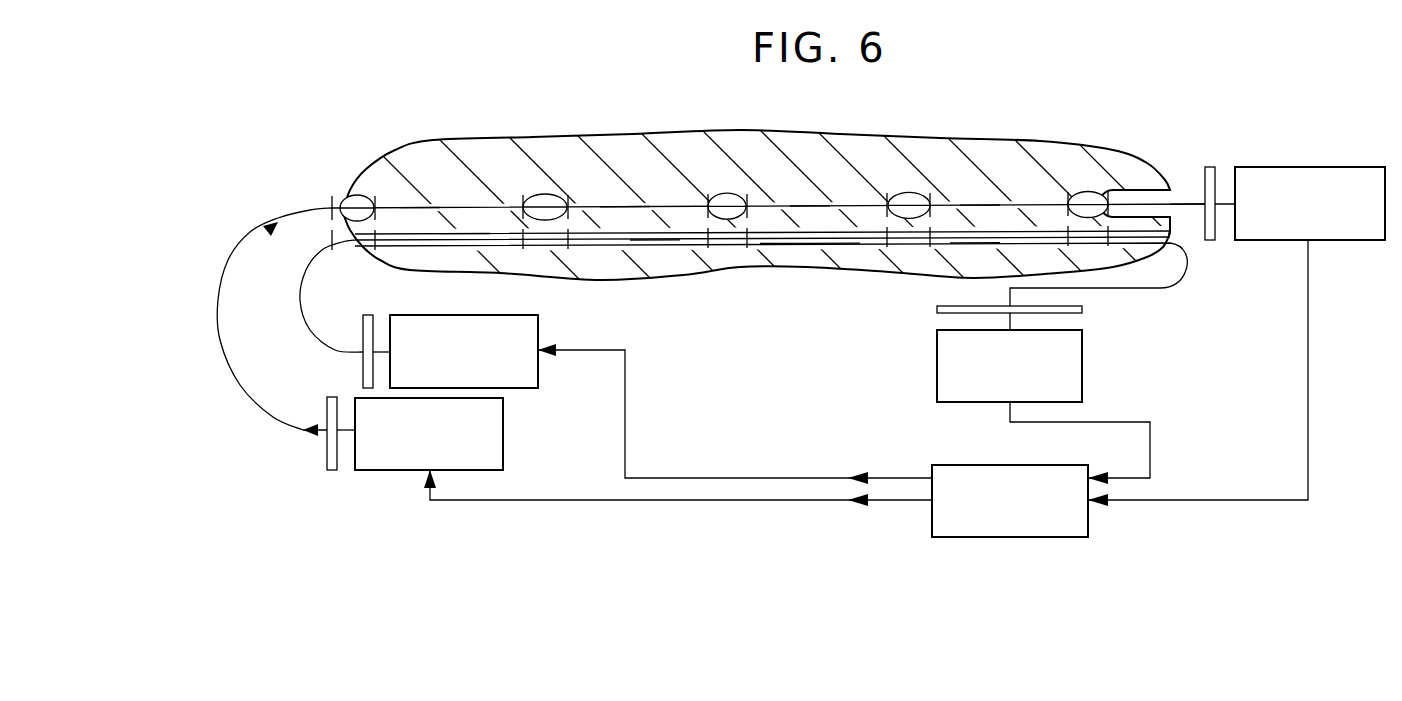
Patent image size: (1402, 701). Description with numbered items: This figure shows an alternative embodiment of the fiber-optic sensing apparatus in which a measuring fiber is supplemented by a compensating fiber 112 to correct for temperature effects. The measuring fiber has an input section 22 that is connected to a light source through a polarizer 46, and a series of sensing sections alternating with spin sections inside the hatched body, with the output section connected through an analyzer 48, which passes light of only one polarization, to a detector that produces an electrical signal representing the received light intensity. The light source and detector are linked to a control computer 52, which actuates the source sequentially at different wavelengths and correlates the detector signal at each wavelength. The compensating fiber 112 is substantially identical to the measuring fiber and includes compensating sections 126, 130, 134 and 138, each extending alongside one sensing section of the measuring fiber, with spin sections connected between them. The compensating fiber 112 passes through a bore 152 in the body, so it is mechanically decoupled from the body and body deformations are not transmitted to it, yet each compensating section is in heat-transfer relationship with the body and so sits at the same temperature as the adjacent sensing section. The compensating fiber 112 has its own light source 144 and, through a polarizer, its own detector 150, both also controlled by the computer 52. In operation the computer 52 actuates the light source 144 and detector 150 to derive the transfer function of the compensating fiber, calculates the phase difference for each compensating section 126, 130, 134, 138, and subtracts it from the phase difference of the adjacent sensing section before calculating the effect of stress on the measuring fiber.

The input section 22 is at (246, 253).
The polarizer 46 is at (332, 470).
The analyzer 48 is at (1210, 167).
The control computer 52 is at (960, 465).
The compensating fiber 112 is at (310, 343).
The compensating section 126 is at (463, 236).
The compensating section 130 is at (655, 243).
The compensating section 134 is at (833, 243).
The compensating section 138 is at (973, 244).
The light source 144 is at (538, 375).
The detector 150 is at (1082, 342).
The bore 152 is at (785, 262).